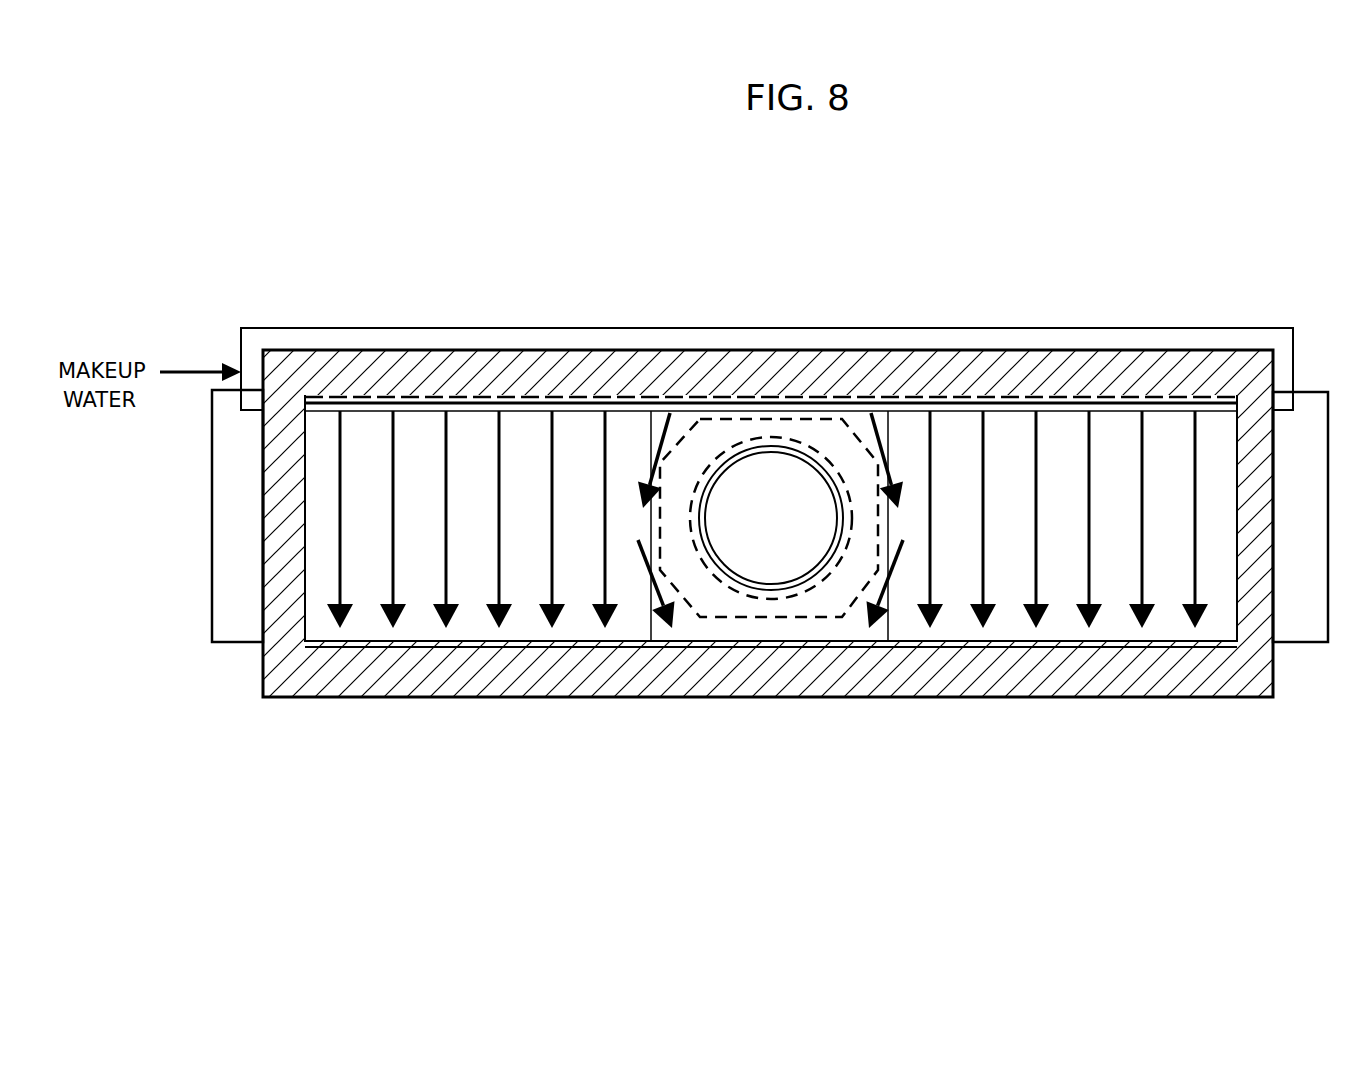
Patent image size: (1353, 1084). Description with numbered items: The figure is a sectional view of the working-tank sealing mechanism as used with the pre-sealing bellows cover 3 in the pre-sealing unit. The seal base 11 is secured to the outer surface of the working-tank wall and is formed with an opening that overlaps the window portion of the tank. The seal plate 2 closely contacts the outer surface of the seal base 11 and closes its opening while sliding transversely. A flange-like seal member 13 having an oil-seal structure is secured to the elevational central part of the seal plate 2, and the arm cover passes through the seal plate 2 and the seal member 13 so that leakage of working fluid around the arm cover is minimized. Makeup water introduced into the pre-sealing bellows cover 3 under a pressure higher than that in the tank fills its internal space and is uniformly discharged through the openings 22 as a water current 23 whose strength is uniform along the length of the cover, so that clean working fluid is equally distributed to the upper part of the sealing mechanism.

The seal plate 2 is at (242, 655).
The pre-sealing bellows cover 3 is at (951, 309).
The seal base 11 is at (342, 715).
The seal member 13 is at (848, 620).
The openings 22 is at (1032, 381).
The water current 23 is at (629, 619).